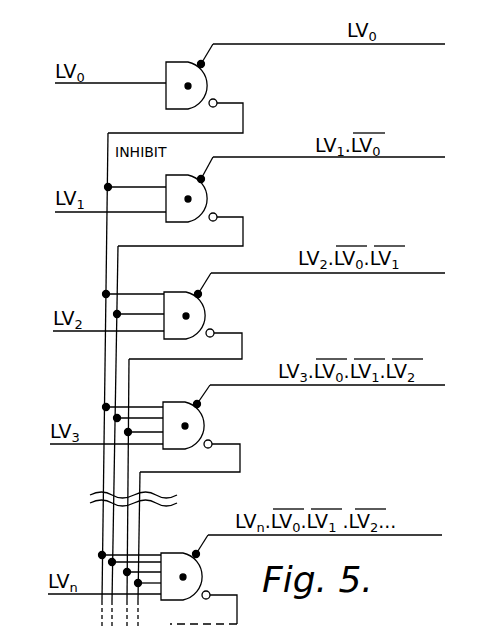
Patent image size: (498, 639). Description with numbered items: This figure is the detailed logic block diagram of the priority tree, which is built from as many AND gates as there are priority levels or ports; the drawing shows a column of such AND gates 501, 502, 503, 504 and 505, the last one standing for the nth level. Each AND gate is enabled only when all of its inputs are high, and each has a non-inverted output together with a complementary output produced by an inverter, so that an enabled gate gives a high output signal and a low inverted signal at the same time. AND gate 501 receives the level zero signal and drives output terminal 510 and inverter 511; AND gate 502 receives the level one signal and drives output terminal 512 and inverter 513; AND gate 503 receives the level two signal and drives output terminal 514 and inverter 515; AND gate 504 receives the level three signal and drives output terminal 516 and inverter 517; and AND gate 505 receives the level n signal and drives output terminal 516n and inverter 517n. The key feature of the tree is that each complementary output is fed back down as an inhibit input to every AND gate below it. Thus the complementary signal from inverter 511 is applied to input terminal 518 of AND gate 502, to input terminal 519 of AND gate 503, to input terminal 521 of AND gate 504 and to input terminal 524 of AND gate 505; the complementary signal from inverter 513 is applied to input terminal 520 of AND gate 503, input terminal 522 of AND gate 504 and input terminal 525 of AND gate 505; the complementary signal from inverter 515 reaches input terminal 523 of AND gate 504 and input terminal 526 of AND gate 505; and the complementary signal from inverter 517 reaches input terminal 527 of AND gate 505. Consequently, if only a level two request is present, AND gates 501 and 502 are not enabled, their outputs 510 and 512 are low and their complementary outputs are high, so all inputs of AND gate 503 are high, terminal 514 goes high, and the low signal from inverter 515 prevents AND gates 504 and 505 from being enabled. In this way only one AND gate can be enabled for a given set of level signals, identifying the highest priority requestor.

The AND gate 501 is at (176, 66).
The AND gate 502 is at (187, 175).
The AND gate 503 is at (172, 294).
The AND gate 504 is at (176, 404).
The AND gate 505 is at (182, 553).
The output terminal 510 is at (204, 64).
The inverter 511 is at (217, 100).
The output terminal 512 is at (204, 179).
The inverter 513 is at (217, 214).
The output terminal 514 is at (201, 294).
The inverter 515 is at (213, 330).
The output terminal 516 is at (200, 404).
The inverter 517 is at (210, 441).
The output terminal 516n is at (199, 554).
The inverter 517n is at (208, 592).
The input terminal 518 is at (107, 185).
The input terminal 519 is at (106, 292).
The input terminal 520 is at (116, 313).
The input terminal 521 is at (106, 405).
The input terminal 522 is at (116, 417).
The input terminal 523 is at (127, 431).
The input terminal 524 is at (103, 554).
The input terminal 525 is at (111, 561).
The input terminal 526 is at (126, 571).
The input terminal 527 is at (137, 583).